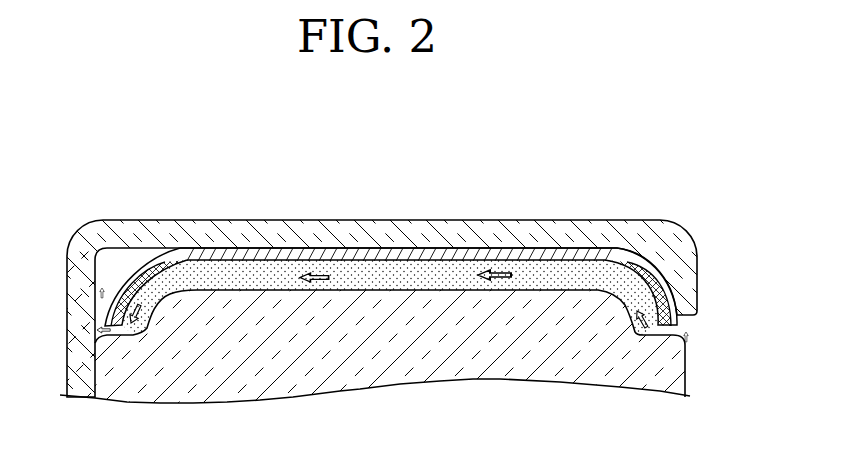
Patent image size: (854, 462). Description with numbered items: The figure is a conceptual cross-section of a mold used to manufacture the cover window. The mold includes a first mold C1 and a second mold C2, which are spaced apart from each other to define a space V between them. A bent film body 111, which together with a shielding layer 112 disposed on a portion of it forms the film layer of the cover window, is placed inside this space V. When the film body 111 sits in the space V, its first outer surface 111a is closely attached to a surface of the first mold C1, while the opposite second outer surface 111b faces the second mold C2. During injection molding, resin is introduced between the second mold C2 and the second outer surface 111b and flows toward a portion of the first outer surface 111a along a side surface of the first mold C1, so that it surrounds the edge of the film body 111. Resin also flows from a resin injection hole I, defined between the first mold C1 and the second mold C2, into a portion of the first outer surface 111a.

The shielding layer 112 is at (142, 270).
The film body 111 is at (207, 248).
The first outer surface 111a is at (327, 250).
The second outer surface 111b is at (372, 261).
The space V is at (272, 277).
The first mold C1 is at (497, 233).
The second mold C2 is at (448, 373).
The resin injection hole I is at (677, 336).